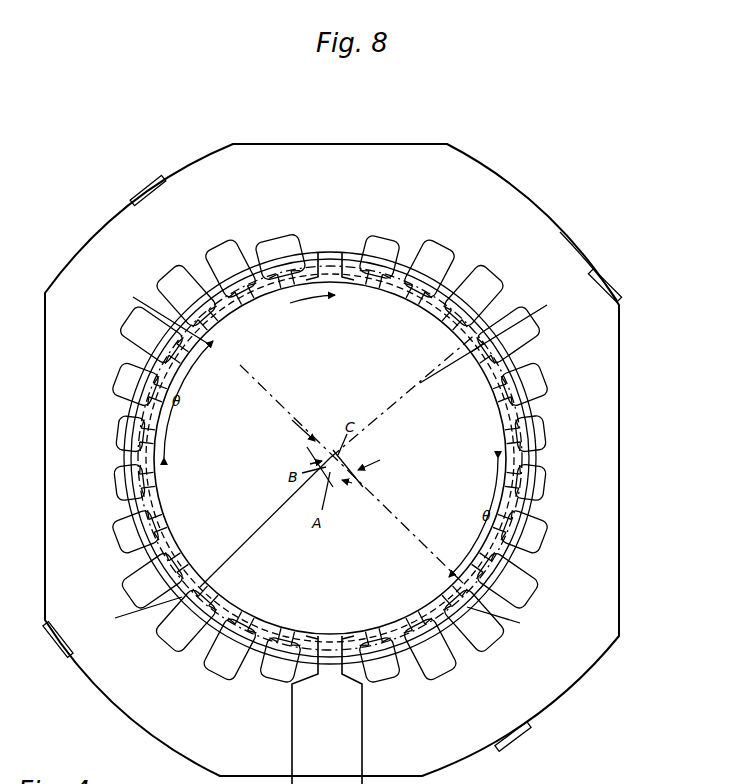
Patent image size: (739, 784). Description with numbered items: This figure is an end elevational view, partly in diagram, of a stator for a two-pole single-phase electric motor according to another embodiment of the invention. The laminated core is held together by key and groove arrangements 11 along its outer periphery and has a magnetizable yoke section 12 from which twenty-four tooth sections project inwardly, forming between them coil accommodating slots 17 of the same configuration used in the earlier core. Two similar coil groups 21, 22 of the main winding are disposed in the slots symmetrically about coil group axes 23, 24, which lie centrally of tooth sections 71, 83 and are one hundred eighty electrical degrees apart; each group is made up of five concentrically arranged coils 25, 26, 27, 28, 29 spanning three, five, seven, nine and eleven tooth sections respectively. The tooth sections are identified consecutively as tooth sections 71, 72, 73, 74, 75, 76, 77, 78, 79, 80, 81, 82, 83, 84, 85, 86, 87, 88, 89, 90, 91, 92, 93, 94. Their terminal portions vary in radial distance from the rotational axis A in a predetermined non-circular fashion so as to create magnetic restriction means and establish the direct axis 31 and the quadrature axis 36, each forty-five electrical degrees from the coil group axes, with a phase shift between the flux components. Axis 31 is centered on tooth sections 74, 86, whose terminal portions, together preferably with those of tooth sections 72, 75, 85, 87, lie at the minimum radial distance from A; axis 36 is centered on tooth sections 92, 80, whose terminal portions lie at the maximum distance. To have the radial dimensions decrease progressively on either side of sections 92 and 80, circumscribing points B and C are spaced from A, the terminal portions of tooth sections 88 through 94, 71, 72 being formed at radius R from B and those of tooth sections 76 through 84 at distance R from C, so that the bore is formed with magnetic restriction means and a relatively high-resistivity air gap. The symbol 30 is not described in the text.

The key and groove arrangements 11 is at (146, 192).
The yoke section 12 is at (583, 244).
The coil accommodating slots 17 is at (285, 242).
The coil group 21 is at (120, 498).
The coil group 22 is at (548, 423).
The coil group axis 23 is at (85, 454).
The coil group axis 24 is at (547, 467).
The coil 25 is at (134, 382).
The coil 26 is at (153, 334).
The coil 27 is at (213, 290).
The coil 28 is at (262, 276).
The coil 29 is at (291, 250).
The tooth tip 30 is at (247, 306).
The direct axis 31 is at (200, 321).
The quadrature axis 36 is at (470, 330).
The tooth section 71 is at (140, 460).
The tooth section 72 is at (167, 413).
The tooth section 73 is at (193, 375).
The tooth section 74 is at (213, 333).
The tooth section 75 is at (233, 313).
The tooth section 76 is at (280, 280).
The tooth section 77 is at (340, 262).
The tooth section 78 is at (390, 237).
The tooth section 79 is at (430, 290).
The tooth section 80 is at (480, 333).
The tooth section 81 is at (513, 367).
The tooth section 82 is at (532, 420).
The tooth section 83 is at (543, 463).
The tooth section 84 is at (508, 503).
The tooth section 85 is at (513, 563).
The tooth section 86 is at (470, 588).
The tooth section 87 is at (437, 637).
The tooth section 88 is at (378, 640).
The tooth section 89 is at (327, 657).
The tooth section 90 is at (267, 637).
The tooth section 91 is at (253, 607).
The tooth section 92 is at (197, 583).
The tooth section 93 is at (167, 550).
The tooth section 94 is at (133, 503).